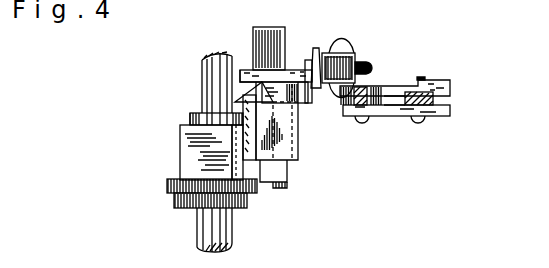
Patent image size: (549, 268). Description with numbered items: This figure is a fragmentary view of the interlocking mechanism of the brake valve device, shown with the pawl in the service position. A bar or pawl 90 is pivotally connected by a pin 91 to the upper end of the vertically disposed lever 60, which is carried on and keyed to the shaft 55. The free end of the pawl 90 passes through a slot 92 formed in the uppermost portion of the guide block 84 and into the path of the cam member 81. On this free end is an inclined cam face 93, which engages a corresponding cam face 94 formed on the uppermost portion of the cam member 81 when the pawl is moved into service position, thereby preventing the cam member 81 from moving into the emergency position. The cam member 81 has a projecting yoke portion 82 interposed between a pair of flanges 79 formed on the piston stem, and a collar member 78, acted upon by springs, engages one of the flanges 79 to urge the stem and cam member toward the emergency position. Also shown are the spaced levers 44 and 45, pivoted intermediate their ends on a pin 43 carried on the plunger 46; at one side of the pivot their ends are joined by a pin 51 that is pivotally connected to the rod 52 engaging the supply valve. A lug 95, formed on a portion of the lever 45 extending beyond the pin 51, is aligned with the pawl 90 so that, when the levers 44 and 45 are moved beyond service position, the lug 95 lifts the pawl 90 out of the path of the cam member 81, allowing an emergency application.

The pin 43 is at (421, 124).
The lever 44 is at (443, 110).
The lever 45 is at (440, 86).
The plunger 46 is at (435, 97).
The pin 51 is at (365, 124).
The rod 52 is at (370, 89).
The shaft 55 is at (200, 231).
The lever 60 is at (371, 66).
The collar member 78 is at (192, 203).
The flanges 79 is at (190, 120).
The cam member 81 is at (264, 188).
The yoke portion 82 is at (180, 152).
The guide block 84 is at (292, 120).
The pawl 90 is at (237, 102).
The pin 91 is at (344, 48).
The slot 92 is at (301, 92).
The inclined cam face 93 is at (236, 84).
The cam face 94 is at (236, 100).
The lug 95 is at (319, 50).